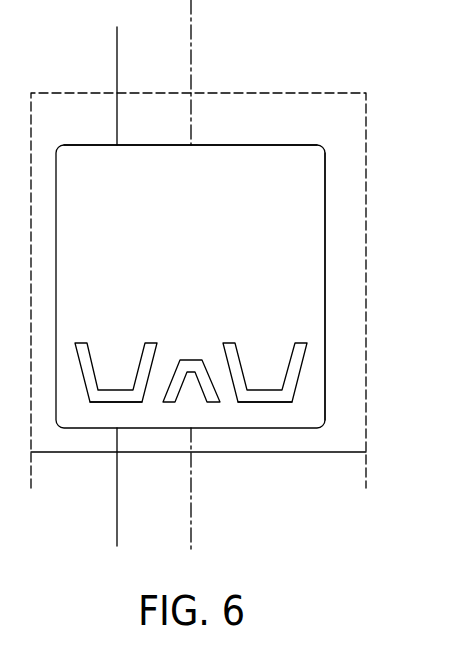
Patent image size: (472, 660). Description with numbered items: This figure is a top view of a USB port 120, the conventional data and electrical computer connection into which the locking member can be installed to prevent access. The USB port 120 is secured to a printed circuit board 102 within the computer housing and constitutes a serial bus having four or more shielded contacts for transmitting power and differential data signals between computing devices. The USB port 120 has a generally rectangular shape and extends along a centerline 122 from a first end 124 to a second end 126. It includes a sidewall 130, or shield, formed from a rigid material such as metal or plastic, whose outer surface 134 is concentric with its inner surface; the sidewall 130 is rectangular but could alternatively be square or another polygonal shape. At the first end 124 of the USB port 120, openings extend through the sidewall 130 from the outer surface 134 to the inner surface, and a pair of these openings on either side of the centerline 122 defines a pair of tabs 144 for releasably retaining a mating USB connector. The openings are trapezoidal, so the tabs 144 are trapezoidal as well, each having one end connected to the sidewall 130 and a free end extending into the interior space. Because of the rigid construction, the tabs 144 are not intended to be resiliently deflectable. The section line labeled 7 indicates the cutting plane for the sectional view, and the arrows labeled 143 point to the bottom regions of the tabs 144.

The section line 7- 7 is at (52, 546).
The printed circuit board 102 is at (348, 233).
The USB port 120 is at (350, 291).
The centerline 122 is at (192, 28).
The first end 124 is at (352, 443).
The second end 126 is at (350, 148).
The sidewall 130 is at (326, 372).
The outer surface 134 is at (213, 214).
The channel bottom 143 is at (98, 412).
The tab 144 is at (117, 360).